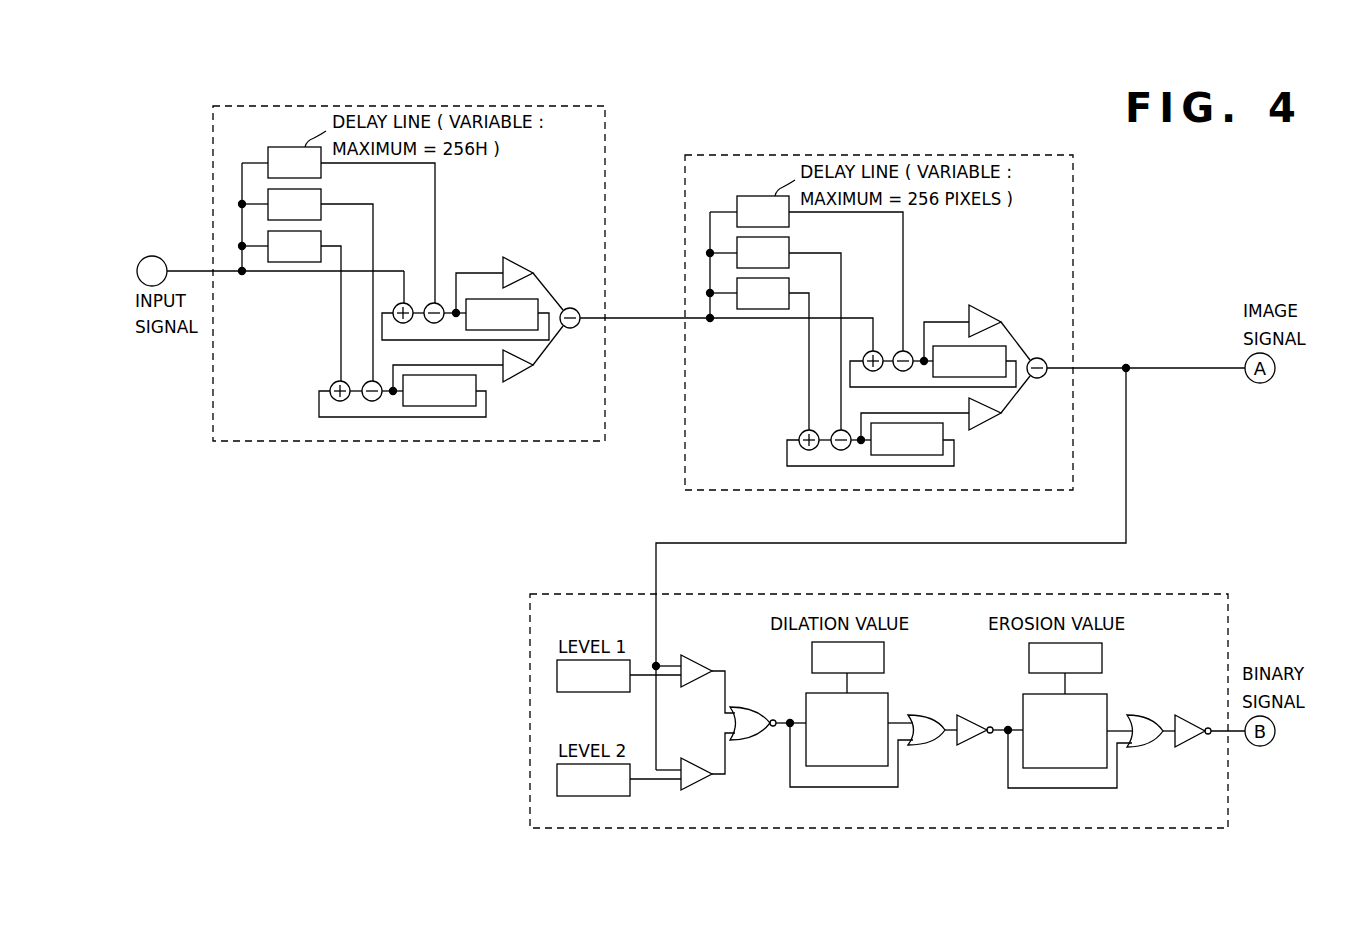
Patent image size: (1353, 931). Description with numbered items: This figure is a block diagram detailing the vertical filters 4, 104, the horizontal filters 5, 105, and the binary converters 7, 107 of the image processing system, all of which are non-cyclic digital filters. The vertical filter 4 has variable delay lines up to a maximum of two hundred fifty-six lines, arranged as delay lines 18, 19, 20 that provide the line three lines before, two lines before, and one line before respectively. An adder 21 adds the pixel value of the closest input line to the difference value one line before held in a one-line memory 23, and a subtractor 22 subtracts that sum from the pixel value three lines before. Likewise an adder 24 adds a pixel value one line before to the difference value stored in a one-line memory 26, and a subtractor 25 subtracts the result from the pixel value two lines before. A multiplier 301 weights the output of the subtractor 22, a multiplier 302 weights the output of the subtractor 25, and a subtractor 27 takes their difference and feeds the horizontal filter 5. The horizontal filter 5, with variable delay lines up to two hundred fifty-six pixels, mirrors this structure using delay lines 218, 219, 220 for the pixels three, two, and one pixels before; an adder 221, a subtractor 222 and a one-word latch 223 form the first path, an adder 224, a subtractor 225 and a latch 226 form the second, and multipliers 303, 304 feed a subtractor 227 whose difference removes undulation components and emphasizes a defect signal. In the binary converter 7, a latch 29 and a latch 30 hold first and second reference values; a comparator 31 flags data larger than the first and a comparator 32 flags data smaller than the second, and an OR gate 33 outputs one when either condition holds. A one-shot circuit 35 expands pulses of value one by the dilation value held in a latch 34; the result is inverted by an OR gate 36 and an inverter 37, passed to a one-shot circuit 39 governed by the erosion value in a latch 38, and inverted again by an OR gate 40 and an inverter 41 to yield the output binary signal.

The vertical linear filter 4 is at (253, 106).
The vertical linear filter 104 is at (409, 256).
The horizontal linear filter 5 is at (722, 155).
The horizontal linear filter 105 is at (879, 305).
The binary converter 7 is at (862, 594).
The binary converter 107 is at (879, 693).
The delay line 18 is at (268, 154).
The delay line 19 is at (268, 196).
The delay line 20 is at (268, 238).
The adder 21 is at (406, 302).
The subtractor 22 is at (437, 302).
The memory 23 is at (487, 299).
The adder 24 is at (340, 401).
The subtractor 25 is at (373, 401).
The memory 26 is at (450, 406).
The subtractor 27 is at (571, 328).
The multiplier 301 is at (515, 270).
The multiplier 302 is at (519, 380).
The delay line 218 is at (737, 203).
The delay line 219 is at (737, 244).
The delay line 220 is at (737, 285).
The adder 221 is at (875, 351).
The subtractor 222 is at (906, 351).
The latch 223 is at (953, 346).
The adder 224 is at (809, 450).
The subtractor 225 is at (842, 450).
The latch 226 is at (917, 455).
The subtractor 227 is at (1039, 378).
The multiplier 303 is at (986, 314).
The multiplier 304 is at (987, 428).
The latch 29 is at (557, 676).
The latch 30 is at (557, 780).
The comparator 31 is at (704, 663).
The comparator 32 is at (704, 786).
The OR gate 33 is at (742, 707).
The latch 34 is at (886, 658).
The one-shot circuit 35 is at (888, 697).
The OR gate 36 is at (931, 745).
The inverter 37 is at (972, 745).
The latch 38 is at (1104, 658).
The one-shot circuit 39 is at (1107, 698).
The OR gate 40 is at (1148, 747).
The inverter 41 is at (1192, 747).